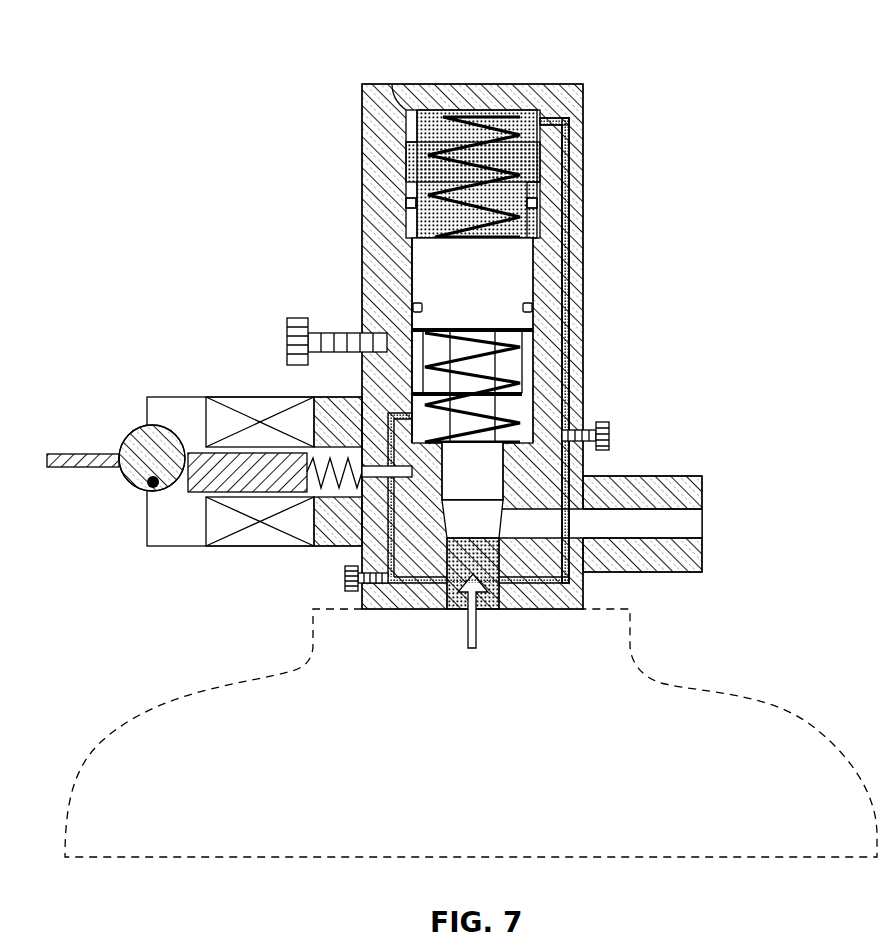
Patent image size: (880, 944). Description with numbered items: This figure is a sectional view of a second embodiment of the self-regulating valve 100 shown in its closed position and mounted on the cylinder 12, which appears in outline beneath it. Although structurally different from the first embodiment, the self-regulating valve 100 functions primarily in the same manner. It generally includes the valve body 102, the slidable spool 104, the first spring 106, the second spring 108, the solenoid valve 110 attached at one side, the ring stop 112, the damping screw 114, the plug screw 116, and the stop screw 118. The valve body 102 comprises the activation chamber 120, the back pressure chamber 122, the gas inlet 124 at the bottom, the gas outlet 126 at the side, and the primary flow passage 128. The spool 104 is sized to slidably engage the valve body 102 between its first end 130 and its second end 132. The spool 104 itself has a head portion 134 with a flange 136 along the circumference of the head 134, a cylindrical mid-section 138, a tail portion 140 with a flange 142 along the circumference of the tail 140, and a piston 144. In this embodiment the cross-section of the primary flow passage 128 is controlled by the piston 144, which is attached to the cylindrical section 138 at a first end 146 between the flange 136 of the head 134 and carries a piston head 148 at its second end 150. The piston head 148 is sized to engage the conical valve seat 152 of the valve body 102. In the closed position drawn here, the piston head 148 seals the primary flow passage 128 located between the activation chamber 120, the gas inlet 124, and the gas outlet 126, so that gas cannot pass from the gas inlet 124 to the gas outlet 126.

The self-regulating valve 100 is at (644, 66).
The valve body 102 is at (552, 140).
The slidable spool 104 is at (528, 268).
The first spring 106 is at (536, 392).
The second spring 108 is at (420, 176).
The solenoid valve 110 is at (175, 547).
The ring stop 112 is at (400, 98).
The damping screw 114 is at (345, 578).
The plug screw 116 is at (611, 435).
The stop screw 118 is at (287, 340).
The activation chamber 120 is at (413, 338).
The back pressure chamber 122 is at (425, 122).
The gas inlet 124 is at (480, 610).
The gas outlet 126 is at (700, 523).
The primary flow passage 128 is at (485, 527).
The first end 130 is at (403, 387).
The second end 132 is at (546, 170).
The head portion 134 is at (518, 330).
The flange 136 is at (433, 352).
The cylindrical mid-section 138 is at (530, 308).
The tail portion 140 is at (545, 222).
The flange 142 is at (415, 222).
The piston 144 is at (530, 405).
The first end 146 is at (535, 350).
The piston head 148 is at (575, 578).
The second end 150 is at (477, 498).
The conical valve seat 152 is at (447, 512).
The cylinder 12 is at (632, 838).